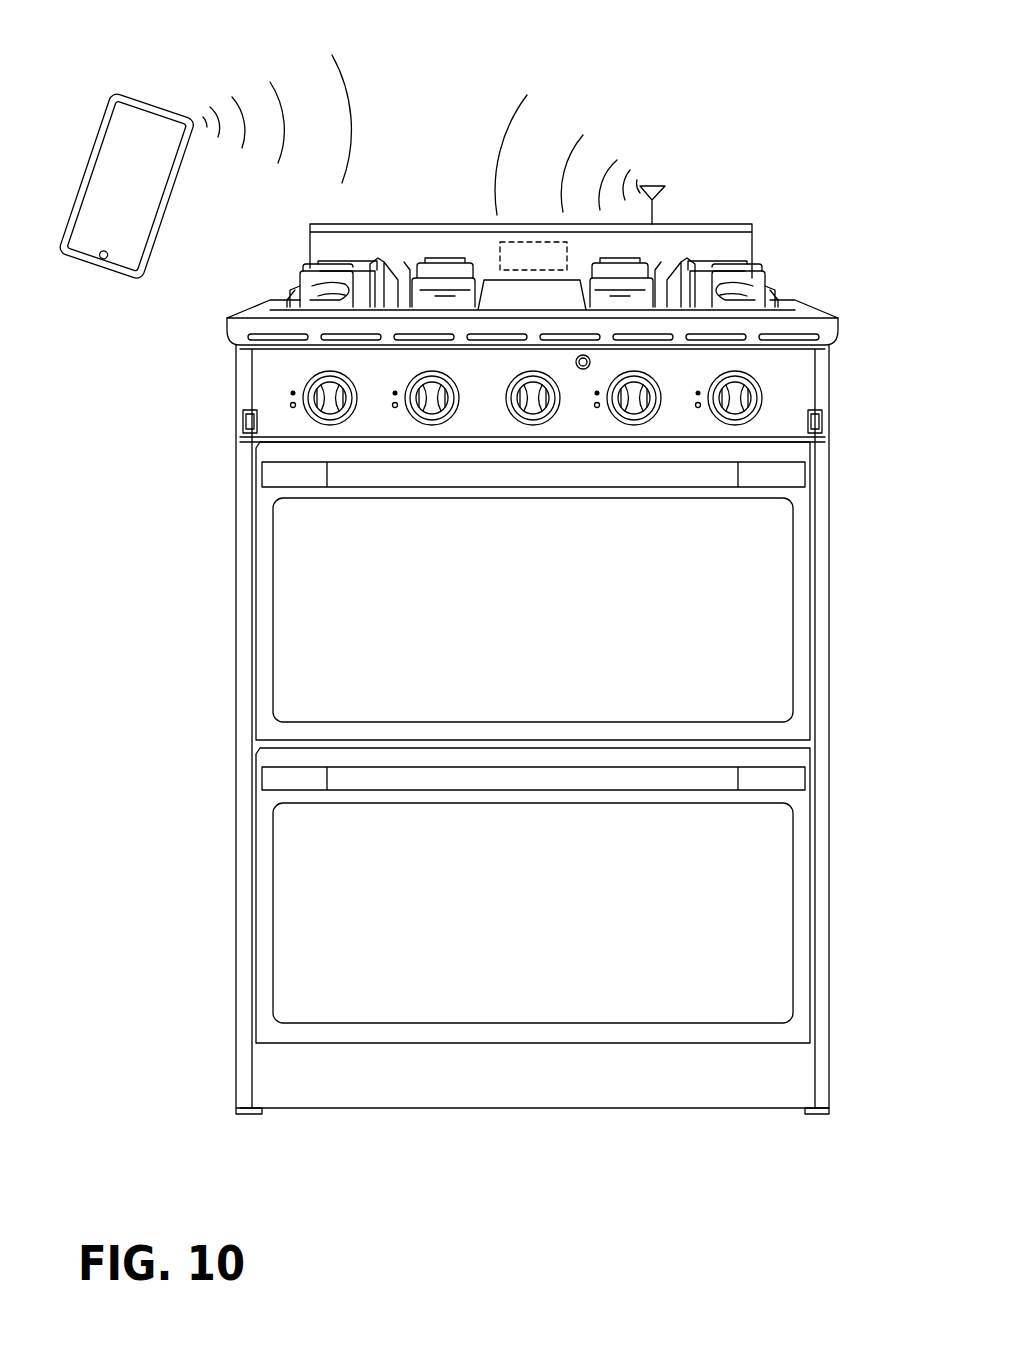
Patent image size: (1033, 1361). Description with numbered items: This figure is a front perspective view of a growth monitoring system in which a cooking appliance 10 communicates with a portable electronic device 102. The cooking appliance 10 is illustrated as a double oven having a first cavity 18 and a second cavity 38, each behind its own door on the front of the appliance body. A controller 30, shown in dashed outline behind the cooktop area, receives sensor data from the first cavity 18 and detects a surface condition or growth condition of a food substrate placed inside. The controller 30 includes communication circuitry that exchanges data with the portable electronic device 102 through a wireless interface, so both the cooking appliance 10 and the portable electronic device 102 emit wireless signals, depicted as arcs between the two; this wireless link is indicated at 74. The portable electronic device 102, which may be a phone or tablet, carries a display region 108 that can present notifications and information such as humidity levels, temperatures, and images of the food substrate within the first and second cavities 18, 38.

The cooking appliance 10 is at (815, 295).
The first cavity 18 is at (690, 604).
The controller 30 is at (498, 245).
The second cavity 38 is at (725, 903).
The wireless communication module 74 is at (733, 156).
The portable electronic device 102 is at (93, 119).
The display 108 is at (138, 222).